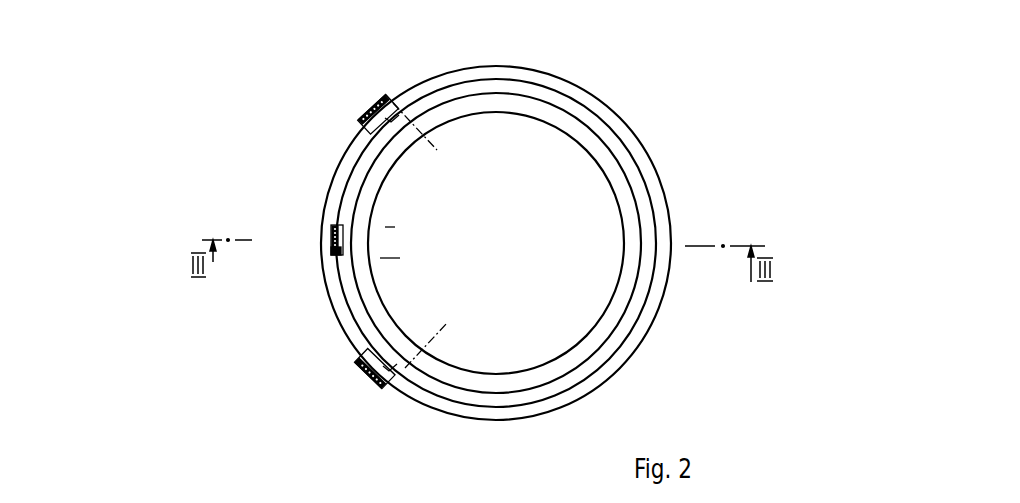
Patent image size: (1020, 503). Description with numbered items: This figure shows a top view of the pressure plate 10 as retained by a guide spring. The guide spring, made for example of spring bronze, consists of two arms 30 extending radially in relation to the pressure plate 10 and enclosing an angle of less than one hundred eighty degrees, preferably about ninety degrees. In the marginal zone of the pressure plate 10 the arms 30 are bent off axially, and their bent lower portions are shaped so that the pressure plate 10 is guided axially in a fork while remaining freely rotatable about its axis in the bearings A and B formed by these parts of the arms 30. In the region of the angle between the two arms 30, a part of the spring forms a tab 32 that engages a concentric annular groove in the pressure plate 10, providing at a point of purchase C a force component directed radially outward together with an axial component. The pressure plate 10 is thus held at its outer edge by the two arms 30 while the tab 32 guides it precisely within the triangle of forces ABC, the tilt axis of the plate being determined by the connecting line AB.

The pressure plate 10 is at (569, 163).
The arms 30 is at (412, 135).
The tab 32 is at (333, 239).
The bearing A is at (407, 180).
The bearing B is at (415, 292).
The point of purchase C is at (300, 186).